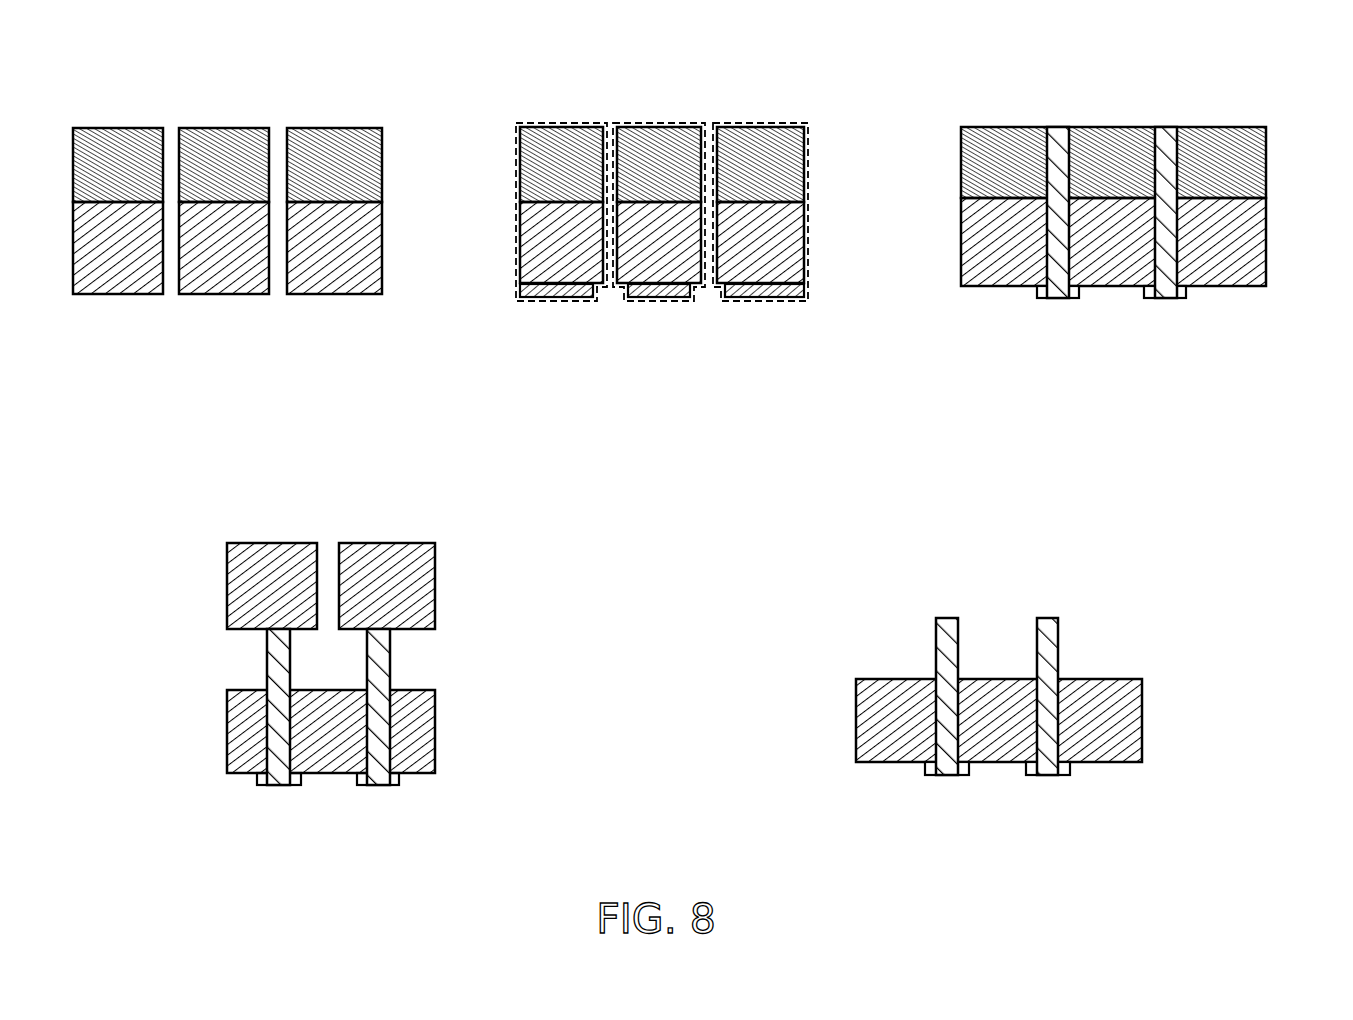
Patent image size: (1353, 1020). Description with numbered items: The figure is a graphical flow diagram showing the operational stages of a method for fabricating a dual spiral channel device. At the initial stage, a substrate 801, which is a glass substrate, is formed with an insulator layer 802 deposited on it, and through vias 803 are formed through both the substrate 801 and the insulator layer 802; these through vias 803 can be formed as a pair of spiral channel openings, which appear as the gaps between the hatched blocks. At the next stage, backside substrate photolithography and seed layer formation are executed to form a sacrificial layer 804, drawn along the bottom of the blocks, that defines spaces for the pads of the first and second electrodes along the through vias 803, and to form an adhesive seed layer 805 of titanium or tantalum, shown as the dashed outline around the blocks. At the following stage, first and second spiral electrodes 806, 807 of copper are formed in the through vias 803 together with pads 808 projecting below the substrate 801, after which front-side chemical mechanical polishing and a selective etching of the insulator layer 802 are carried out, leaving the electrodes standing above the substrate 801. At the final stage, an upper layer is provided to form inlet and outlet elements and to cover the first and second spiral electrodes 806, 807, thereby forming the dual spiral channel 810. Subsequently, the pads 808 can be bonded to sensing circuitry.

The substrate 801 is at (117, 278).
The insulator layer 802 is at (110, 145).
The through vias 803 is at (278, 133).
The sacrificial layer 804 is at (647, 301).
The adhesive seed layer 805 is at (573, 122).
The first spiral electrode 806 is at (1057, 262).
The second spiral electrode 807 is at (1165, 246).
The pads 808 is at (1153, 296).
The dual spiral channel 810 is at (327, 675).